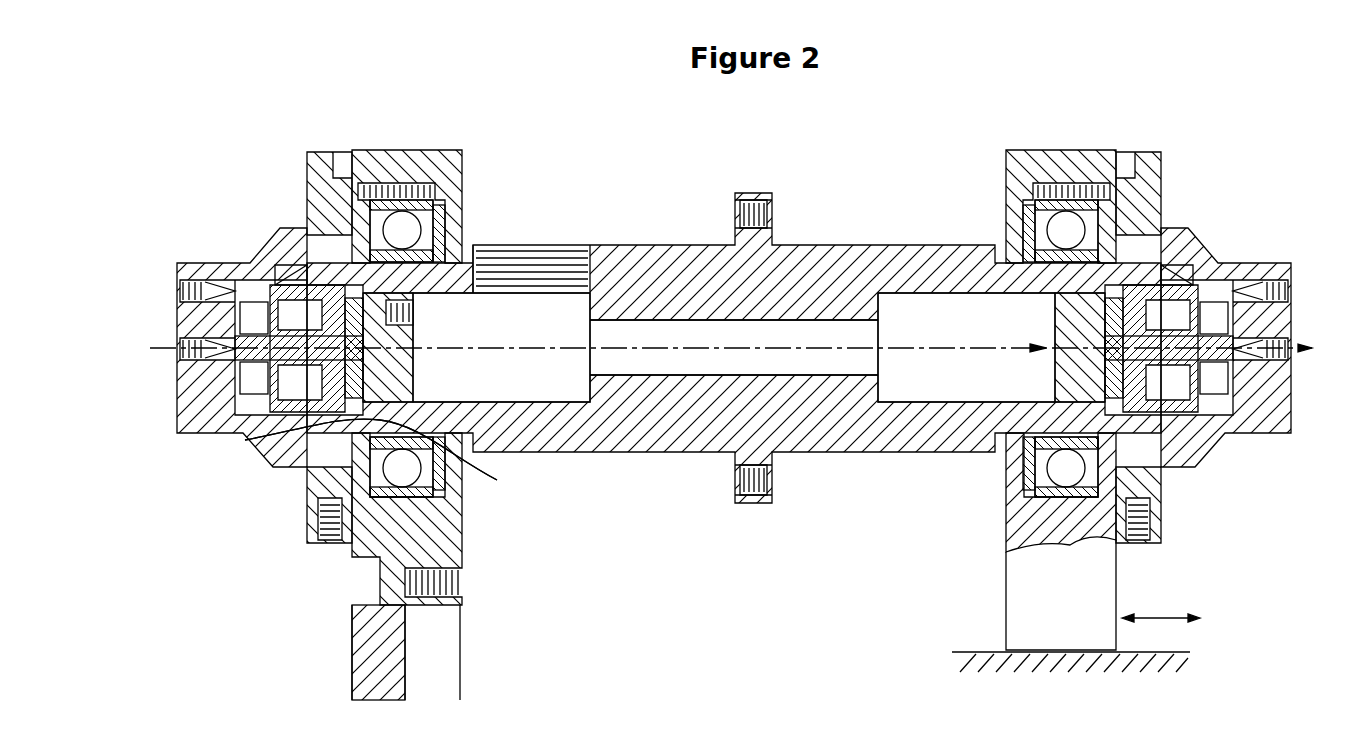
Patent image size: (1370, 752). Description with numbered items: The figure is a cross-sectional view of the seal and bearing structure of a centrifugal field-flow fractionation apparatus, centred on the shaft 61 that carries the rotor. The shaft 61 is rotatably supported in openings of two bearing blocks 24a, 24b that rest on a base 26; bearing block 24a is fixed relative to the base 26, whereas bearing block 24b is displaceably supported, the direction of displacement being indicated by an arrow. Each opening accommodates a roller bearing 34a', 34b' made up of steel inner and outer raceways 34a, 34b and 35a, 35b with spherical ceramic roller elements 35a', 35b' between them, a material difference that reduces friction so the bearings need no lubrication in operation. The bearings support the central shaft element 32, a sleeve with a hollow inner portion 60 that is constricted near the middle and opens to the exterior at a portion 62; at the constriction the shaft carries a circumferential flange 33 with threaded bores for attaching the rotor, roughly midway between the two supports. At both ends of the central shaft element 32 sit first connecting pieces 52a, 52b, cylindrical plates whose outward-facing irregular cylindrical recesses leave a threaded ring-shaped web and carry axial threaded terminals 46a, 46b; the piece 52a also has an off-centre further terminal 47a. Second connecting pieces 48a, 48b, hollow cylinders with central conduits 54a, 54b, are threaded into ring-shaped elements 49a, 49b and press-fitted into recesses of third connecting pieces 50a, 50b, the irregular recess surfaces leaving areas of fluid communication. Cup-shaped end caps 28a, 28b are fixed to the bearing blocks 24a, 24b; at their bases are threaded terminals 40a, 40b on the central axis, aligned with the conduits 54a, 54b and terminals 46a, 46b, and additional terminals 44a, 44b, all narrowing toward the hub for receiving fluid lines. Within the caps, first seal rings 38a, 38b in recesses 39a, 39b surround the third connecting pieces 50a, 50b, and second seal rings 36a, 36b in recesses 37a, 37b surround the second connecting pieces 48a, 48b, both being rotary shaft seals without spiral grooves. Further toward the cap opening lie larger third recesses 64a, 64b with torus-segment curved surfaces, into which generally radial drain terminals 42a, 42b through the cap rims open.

The bearing block 24a is at (462, 542).
The bearing block 24b is at (1022, 603).
The base 26 is at (1185, 658).
The end cap 28a is at (279, 222).
The end cap 28b is at (1185, 230).
The central shaft element 32 is at (838, 245).
The circumferential flange 33 is at (752, 200).
The inner raceway 34a is at (454, 348).
The roller bearing 34a' is at (484, 320).
The inner raceway 34b is at (1012, 348).
The roller bearing 34b' is at (980, 318).
The outer raceway 35a is at (414, 142).
The roller elements 35a' is at (390, 167).
The outer raceway 35b is at (1057, 142).
The roller elements 35b' is at (1081, 167).
The second seal ring 36a is at (248, 378).
The second seal ring 36b is at (1225, 380).
The second recess 37a is at (240, 314).
The second recess 37b is at (1235, 312).
The first seal ring 38a is at (320, 440).
The first seal ring 38b is at (1160, 445).
The first recess 39a is at (283, 272).
The first recess 39b is at (1185, 272).
The terminal 40a is at (192, 350).
The terminal 40b is at (1276, 352).
The terminal 42a is at (326, 545).
The terminal 42b is at (1140, 545).
The terminal 44a is at (195, 290).
The terminal 44b is at (1270, 290).
The terminal 46a is at (445, 342).
The terminal 46b is at (1065, 343).
The further terminal 47a is at (418, 311).
The second connecting piece 48a is at (240, 395).
The second connecting piece 48b is at (1228, 395).
The ring-shaped element 49a is at (320, 470).
The ring-shaped element 49b is at (1050, 437).
The third connecting piece 50a is at (390, 458).
The third connecting piece 50b is at (1195, 432).
The first connecting piece 52a is at (410, 392).
The first connecting piece 52b is at (1058, 390).
The central conduit 54a is at (292, 388).
The central conduit 54b is at (1200, 388).
The hollow inner portion 60 is at (652, 362).
The shaft 61 is at (672, 192).
The connecting portion 62 is at (548, 245).
The third recess 64a is at (322, 200).
The third recess 64b is at (1150, 200).